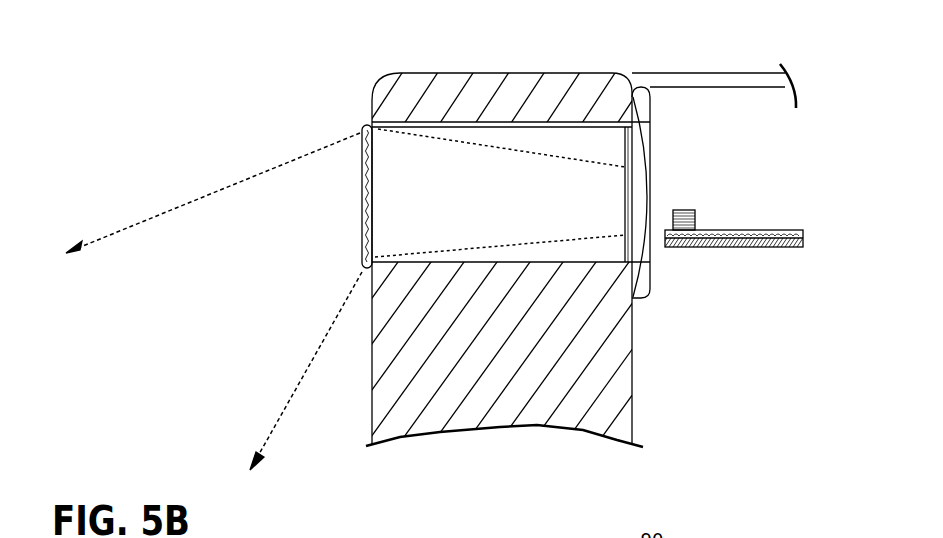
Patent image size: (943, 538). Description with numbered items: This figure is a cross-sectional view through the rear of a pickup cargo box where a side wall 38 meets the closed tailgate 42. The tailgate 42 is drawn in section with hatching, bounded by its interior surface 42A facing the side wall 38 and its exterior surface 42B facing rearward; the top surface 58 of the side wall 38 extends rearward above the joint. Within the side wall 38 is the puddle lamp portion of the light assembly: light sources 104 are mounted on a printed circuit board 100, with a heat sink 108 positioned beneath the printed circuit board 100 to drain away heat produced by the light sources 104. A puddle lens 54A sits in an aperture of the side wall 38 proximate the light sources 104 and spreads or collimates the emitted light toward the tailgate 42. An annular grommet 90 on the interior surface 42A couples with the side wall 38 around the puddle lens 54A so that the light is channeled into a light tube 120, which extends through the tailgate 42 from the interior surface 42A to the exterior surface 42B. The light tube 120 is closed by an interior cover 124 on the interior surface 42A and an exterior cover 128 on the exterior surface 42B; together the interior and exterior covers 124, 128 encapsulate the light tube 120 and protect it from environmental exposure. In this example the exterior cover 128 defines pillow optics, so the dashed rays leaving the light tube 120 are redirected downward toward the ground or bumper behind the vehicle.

The side wall 38 is at (693, 386).
The tailgate 42 is at (490, 363).
The interior surface 42A is at (633, 395).
The exterior surface 42B is at (372, 368).
The puddle lens 54A is at (640, 177).
The top surface 58 is at (726, 70).
The grommet 90 is at (640, 103).
The printed circuit board 100 is at (737, 230).
The light sources 104 is at (697, 213).
The heat sink 108 is at (728, 248).
The light tube 120 is at (478, 264).
The interior cover 124 is at (629, 148).
The exterior cover 128 is at (362, 160).